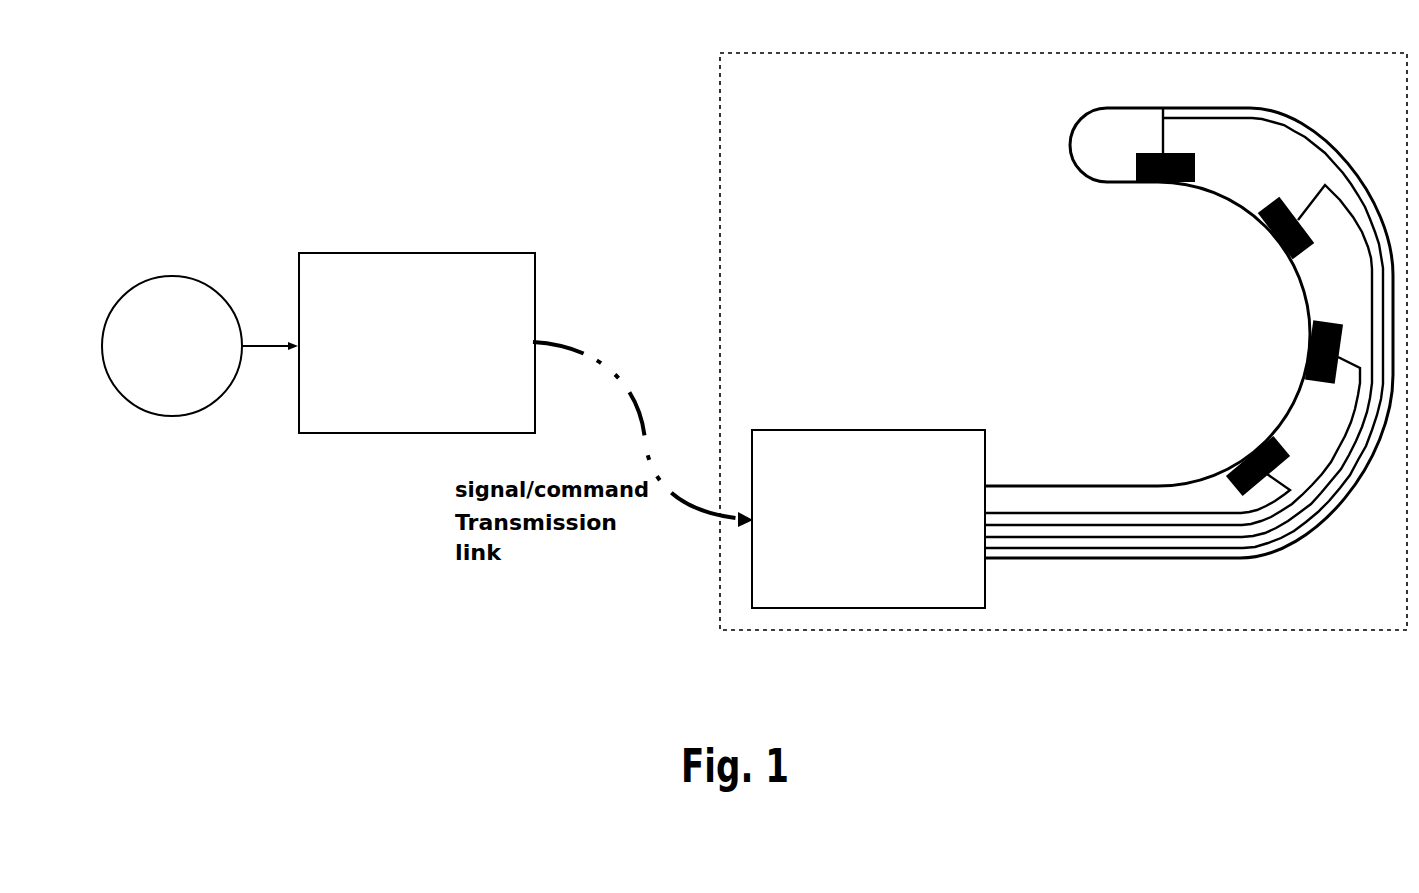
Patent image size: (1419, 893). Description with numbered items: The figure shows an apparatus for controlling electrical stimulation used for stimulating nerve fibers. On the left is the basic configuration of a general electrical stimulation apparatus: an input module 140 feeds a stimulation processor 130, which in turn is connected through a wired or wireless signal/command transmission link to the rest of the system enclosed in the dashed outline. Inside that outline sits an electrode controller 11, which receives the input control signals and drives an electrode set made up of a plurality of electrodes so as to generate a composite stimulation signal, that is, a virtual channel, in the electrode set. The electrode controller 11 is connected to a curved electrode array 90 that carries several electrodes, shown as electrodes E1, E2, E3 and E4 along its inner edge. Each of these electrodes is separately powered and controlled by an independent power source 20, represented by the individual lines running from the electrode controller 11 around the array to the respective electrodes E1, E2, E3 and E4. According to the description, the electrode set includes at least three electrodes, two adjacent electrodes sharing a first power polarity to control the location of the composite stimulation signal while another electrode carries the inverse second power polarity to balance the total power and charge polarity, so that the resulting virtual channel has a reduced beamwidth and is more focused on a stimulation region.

The input module 140 is at (183, 268).
The stimulation processor 130 is at (423, 250).
The electrode controller 11 is at (887, 422).
The electrode array 90 is at (1064, 145).
The independent power source 20 is at (1208, 117).
The electrode E1 is at (1165, 182).
The electrode E2 is at (1278, 232).
The electrode E3 is at (1308, 352).
The electrode E4 is at (1254, 463).